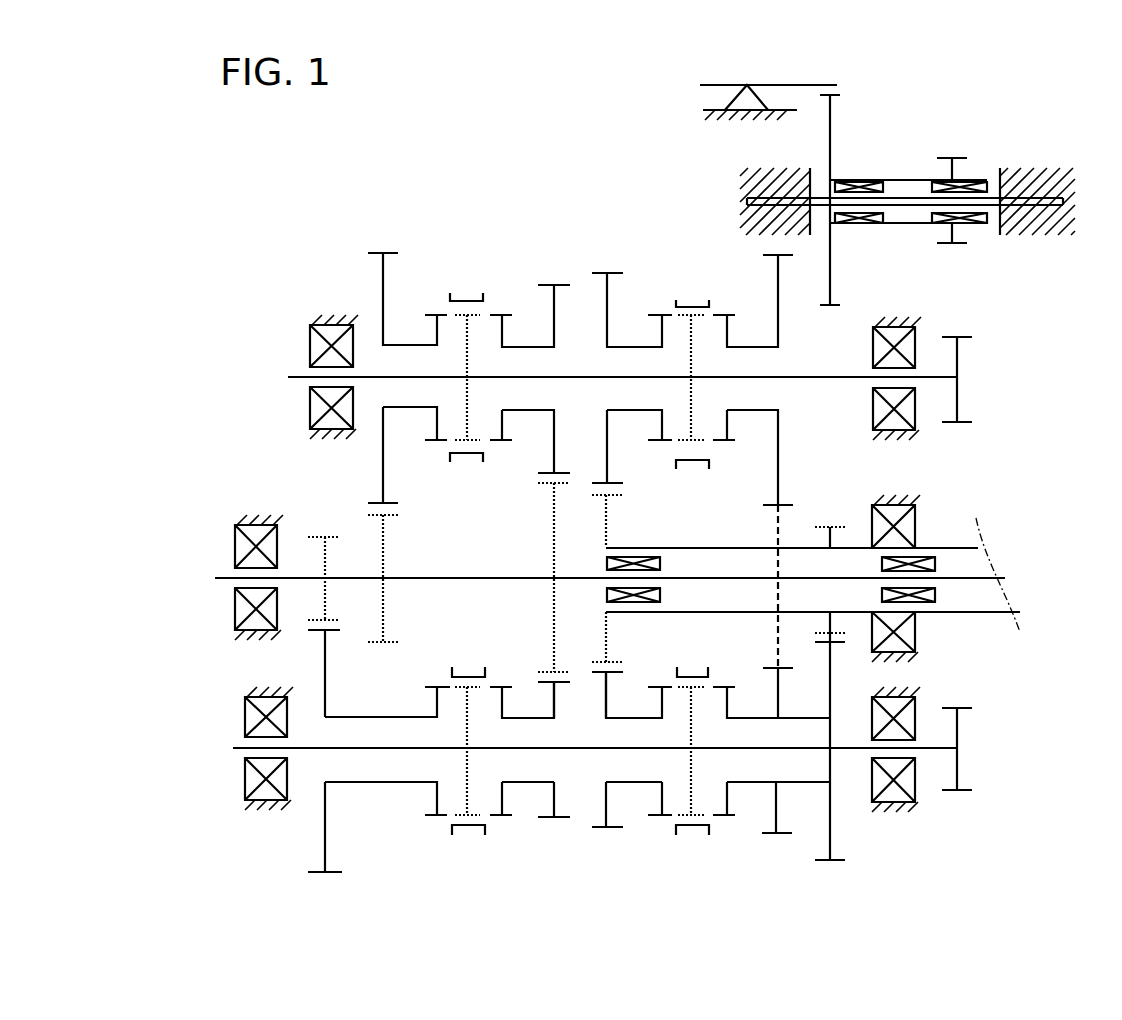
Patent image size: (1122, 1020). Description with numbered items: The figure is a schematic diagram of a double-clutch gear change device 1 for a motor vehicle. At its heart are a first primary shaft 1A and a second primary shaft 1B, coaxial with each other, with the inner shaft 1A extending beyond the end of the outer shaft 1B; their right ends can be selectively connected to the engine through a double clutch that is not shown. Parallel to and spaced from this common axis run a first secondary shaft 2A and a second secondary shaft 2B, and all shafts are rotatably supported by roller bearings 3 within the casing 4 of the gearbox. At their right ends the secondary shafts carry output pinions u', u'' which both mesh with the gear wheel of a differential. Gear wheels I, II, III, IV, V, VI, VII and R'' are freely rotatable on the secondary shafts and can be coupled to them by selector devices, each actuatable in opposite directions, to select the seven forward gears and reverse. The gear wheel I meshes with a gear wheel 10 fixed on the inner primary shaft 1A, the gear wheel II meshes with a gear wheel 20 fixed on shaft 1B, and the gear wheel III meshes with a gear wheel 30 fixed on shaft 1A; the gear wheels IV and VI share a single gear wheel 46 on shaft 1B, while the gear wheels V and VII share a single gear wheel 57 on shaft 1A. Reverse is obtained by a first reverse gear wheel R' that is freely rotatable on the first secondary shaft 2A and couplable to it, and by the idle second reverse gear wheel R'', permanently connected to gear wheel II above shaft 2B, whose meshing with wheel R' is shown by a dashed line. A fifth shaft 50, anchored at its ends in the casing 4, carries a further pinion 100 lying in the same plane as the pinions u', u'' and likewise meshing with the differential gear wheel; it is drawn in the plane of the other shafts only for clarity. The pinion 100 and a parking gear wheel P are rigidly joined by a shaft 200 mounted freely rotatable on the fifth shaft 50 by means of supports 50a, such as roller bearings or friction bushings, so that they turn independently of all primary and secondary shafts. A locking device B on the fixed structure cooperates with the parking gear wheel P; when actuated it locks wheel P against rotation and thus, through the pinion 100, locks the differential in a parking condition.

The dual clutch transmission 1 is at (203, 277).
The roller bearings 3 is at (310, 350).
The casing 4 is at (326, 318).
The gear wheel 10 is at (320, 565).
The gear wheel 20 is at (826, 545).
The gear wheel 30 is at (385, 553).
The gear wheel 46 is at (609, 520).
The gear wheel 57 is at (553, 548).
The fifth shaft 50 is at (904, 199).
The supports 50a is at (858, 225).
The pinion 100 is at (955, 176).
The shaft 200 is at (900, 226).
The first primary shaft 1A is at (963, 575).
The second primary shaft 1B is at (950, 535).
The first secondary shaft 2A is at (933, 398).
The second secondary shaft 2B is at (925, 758).
The output pinion u' is at (658, 389).
The output pinion u'' is at (633, 760).
The gear wheel of the first gear I is at (313, 838).
The gear wheel of the second gear II is at (836, 825).
The gear wheel of the third gear III is at (382, 281).
The gear wheel of the fourth gear IV is at (608, 310).
The gear wheel of the fifth gear V is at (548, 316).
The gear wheel of the sixth gear VI is at (603, 808).
The gear wheel of the seventh gear VII is at (548, 826).
The first reverse gear wheel R' is at (753, 486).
The second reverse gear wheel R'' is at (771, 785).
The locking device B is at (717, 78).
The parking gear wheel P is at (834, 141).